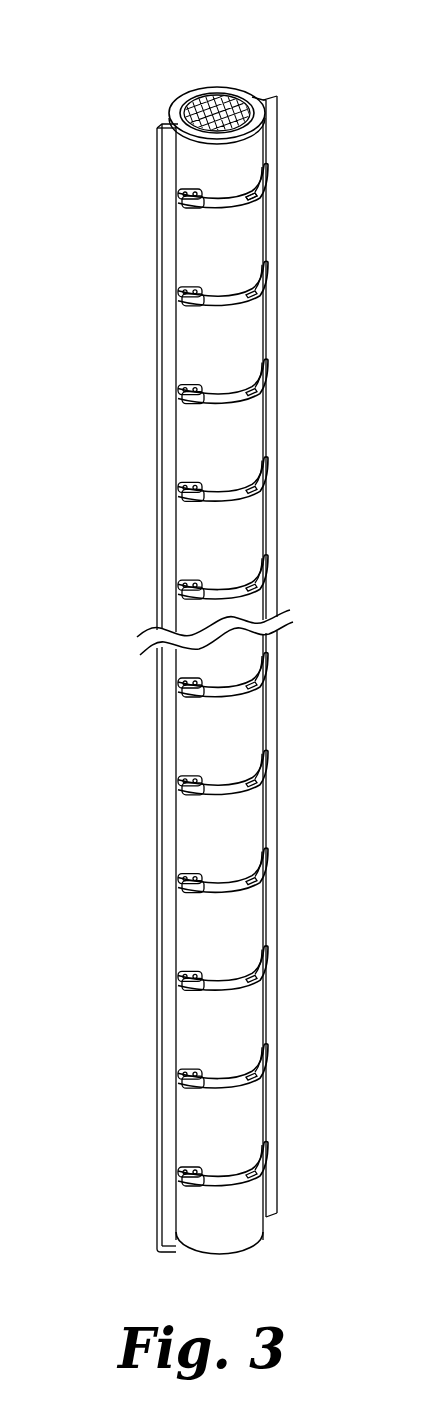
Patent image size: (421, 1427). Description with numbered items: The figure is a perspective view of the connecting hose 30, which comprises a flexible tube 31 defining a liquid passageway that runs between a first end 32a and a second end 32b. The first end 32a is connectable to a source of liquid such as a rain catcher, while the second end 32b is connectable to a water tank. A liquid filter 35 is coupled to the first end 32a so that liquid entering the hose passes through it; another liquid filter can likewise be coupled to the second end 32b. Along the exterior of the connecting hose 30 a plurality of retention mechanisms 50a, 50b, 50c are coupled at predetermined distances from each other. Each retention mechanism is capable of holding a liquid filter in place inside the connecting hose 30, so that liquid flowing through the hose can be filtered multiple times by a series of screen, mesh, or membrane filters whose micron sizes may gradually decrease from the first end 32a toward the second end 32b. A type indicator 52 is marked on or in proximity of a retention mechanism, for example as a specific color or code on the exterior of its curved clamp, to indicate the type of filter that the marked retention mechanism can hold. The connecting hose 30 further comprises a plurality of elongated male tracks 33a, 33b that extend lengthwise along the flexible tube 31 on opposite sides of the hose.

The connecting hose 30 is at (318, 175).
The flexible tube 31 is at (178, 92).
The first end 32a is at (248, 66).
The second end 32b is at (247, 1270).
The elongated male track 33a is at (163, 123).
The elongated male track 33b is at (274, 97).
The liquid filter 35 is at (217, 108).
The retention mechanism 50a is at (222, 236).
The retention mechanism 50b is at (222, 333).
The retention mechanism 50c is at (222, 431).
The type indicator 52 is at (258, 196).